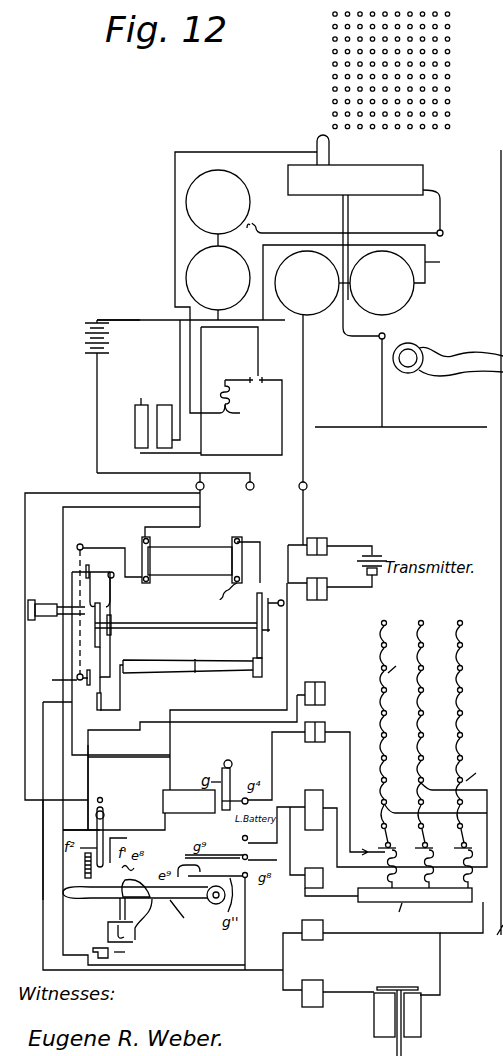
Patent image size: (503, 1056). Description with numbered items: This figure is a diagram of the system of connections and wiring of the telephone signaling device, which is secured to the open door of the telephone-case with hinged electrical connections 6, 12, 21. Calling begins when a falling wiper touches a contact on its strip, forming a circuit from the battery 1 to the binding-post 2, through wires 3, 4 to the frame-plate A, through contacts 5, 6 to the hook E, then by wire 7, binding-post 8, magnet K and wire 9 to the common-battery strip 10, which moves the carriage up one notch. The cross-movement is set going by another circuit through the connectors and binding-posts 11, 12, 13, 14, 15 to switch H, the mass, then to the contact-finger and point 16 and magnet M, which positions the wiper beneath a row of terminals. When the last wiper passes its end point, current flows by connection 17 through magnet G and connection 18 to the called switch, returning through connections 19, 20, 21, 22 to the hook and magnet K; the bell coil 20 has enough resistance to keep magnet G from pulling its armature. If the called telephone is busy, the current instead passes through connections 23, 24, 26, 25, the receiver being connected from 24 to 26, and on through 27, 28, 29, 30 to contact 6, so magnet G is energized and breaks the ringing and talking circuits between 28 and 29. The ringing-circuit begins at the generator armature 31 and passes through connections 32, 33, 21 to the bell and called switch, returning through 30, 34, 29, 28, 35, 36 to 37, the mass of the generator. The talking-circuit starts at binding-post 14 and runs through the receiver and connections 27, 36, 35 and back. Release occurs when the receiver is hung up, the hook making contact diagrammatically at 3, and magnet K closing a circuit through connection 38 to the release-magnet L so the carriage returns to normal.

The battery 1 is at (106, 396).
The binding-post 2 is at (258, 494).
The wire 3 is at (103, 800).
The wire 4 is at (160, 852).
The contact 5 is at (385, 334).
The contact 6 is at (314, 810).
The wire 7 is at (91, 781).
The binding-post 8 is at (307, 486).
The wire 9 is at (440, 263).
The common-battery strip 10 is at (136, 321).
The connector 11 is at (461, 919).
The binding-post 12 is at (303, 955).
The binding-post 13 is at (138, 509).
The binding-post 14 is at (204, 486).
The binding-post 15 is at (258, 348).
The point 16 is at (444, 233).
The connection 17 is at (323, 690).
The connection 18 is at (124, 831).
The connection 19 is at (442, 969).
The coil of the bell 20 is at (421, 1018).
The connection 21 is at (308, 1010).
The connection 22 is at (247, 918).
The connection 23 is at (192, 560).
The connection 24 is at (85, 551).
The connection 25 is at (114, 663).
The connection 26 is at (60, 679).
The connection 27 is at (114, 580).
The connection 28 is at (232, 775).
The connection 29 is at (278, 772).
The connection 30 is at (355, 793).
The armature 31 is at (198, 675).
The connection 32 is at (103, 703).
The connection 33 is at (43, 853).
The connection 34 is at (323, 727).
The connection 35 is at (113, 757).
The connection 36 is at (90, 573).
The mass of the generator 37 is at (155, 624).
The connection 38 is at (274, 378).